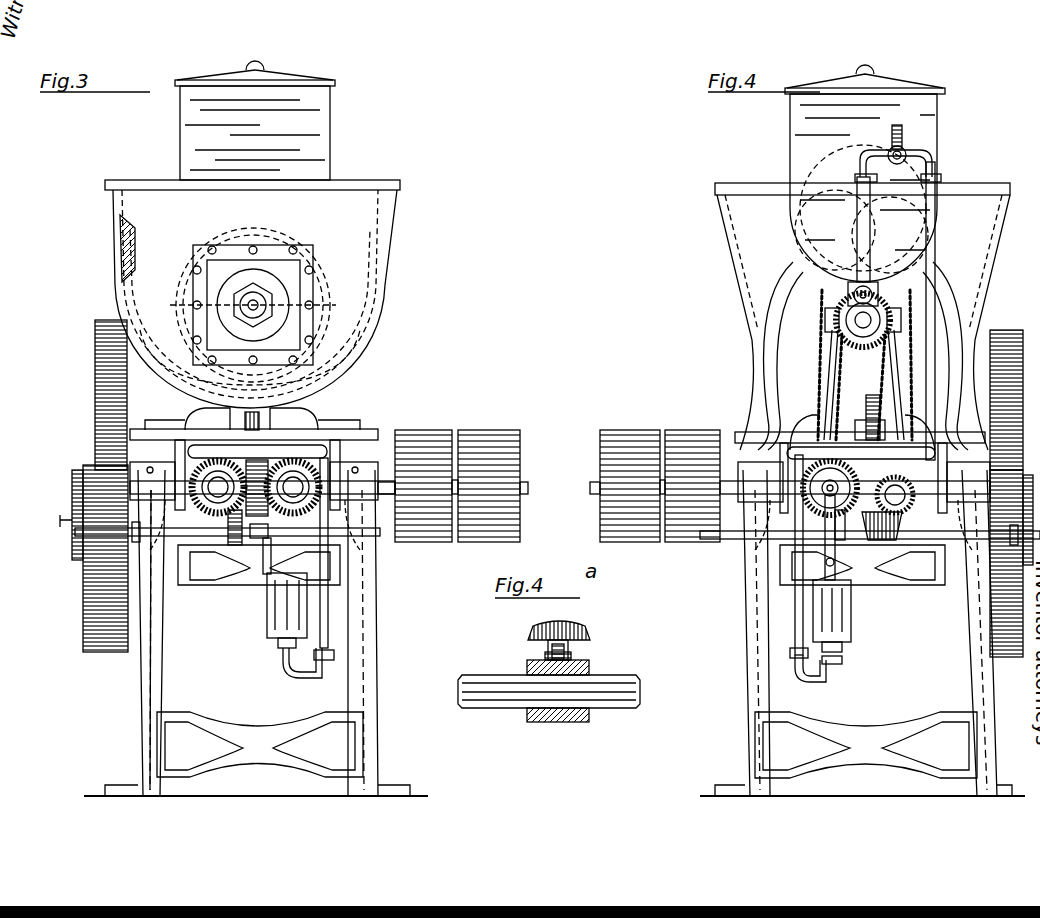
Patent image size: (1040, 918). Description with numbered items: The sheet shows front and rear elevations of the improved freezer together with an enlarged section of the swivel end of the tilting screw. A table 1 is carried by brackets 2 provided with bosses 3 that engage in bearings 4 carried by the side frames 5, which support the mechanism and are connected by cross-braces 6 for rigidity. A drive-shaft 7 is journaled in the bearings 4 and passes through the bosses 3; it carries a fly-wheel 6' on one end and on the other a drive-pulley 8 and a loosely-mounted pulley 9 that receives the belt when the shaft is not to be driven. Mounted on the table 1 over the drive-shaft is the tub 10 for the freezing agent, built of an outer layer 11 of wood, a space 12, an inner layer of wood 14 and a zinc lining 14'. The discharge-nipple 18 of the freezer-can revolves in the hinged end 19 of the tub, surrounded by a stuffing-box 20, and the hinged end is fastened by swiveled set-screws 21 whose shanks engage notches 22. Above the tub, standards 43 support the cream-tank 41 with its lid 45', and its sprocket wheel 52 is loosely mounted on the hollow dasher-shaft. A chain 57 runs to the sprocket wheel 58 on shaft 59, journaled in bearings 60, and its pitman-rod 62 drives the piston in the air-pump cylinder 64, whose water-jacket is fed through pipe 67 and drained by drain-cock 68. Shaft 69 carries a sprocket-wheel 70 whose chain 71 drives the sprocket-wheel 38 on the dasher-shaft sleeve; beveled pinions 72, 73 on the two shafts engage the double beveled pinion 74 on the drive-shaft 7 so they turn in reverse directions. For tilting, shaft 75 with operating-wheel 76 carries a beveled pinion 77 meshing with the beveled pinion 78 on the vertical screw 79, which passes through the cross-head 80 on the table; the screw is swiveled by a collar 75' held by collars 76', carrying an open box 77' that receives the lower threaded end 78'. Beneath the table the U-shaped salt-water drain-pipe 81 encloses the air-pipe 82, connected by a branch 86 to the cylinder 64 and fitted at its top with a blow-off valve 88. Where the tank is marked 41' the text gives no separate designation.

In FIG. 3, the table 1 is at (366, 440).
In FIG. 4, the table 1 is at (750, 432).
In FIG. 3, the brackets 2 is at (262, 510).
In FIG. 4, the brackets 2 is at (851, 475).
In FIG. 3, the bosses 3 is at (267, 526).
In FIG. 4, the bosses 3 is at (851, 515).
In FIG. 3, the bearings 4 is at (372, 452).
In FIG. 4, the bearings 4 is at (950, 490).
In FIG. 3, the side frames 5 is at (155, 675).
In FIG. 4, the side frames 5 is at (760, 690).
In FIG. 3, the cross-braces 6 is at (260, 672).
In FIG. 4, the cross-braces 6 is at (866, 676).
In FIG. 3, the fly-wheel 6' is at (86, 619).
In FIG. 4, the fly-wheel 6' is at (989, 399).
In FIG. 3, the drive-shaft 7 is at (385, 500).
In FIG. 4, the drive-shaft 7 is at (736, 517).
In FIG. 3, the drive-pulley 8 is at (415, 500).
In FIG. 4, the drive-pulley 8 is at (687, 500).
In FIG. 3, the loosely-mounted pulley 9 is at (490, 500).
In FIG. 4, the loosely-mounted pulley 9 is at (625, 500).
In FIG. 3, the tub 10 is at (252, 294).
In FIG. 4, the tub 10 is at (862, 316).
In FIG. 3, the outer layer 11 is at (120, 232).
In FIG. 3, the space 12 is at (125, 240).
In FIG. 3, the inner layer of wood 14 is at (95, 267).
In FIG. 3, the zinc lining 14' is at (92, 285).
In FIG. 3, the discharge-nipple 18 is at (265, 318).
In FIG. 3, the hinged end 19 is at (253, 305).
In FIG. 3, the stuffing-box 20 is at (246, 295).
In FIG. 3, the swiveled set-screws 21 is at (196, 305).
In FIG. 3, the notches 22 is at (255, 248).
In FIG. 4, the sprocket-wheel 38 is at (861, 322).
In FIG. 3, the cream-tank 41 is at (271, 133).
In FIG. 4, the tank 41' is at (863, 188).
In FIG. 3, the standards 43 is at (252, 417).
In FIG. 4, the standards 43 is at (790, 310).
In FIG. 3, the lid 45' is at (259, 71).
In FIG. 4, the lid 45' is at (873, 75).
In FIG. 4, the sprocket wheel 52 is at (855, 328).
In FIG. 4, the chain 57 is at (854, 365).
In FIG. 4, the sprocket wheel 58 is at (820, 520).
In FIG. 4, the shaft 59 is at (818, 500).
In FIG. 4, the bearings 60 is at (820, 470).
In FIG. 3, the pitman-rod 62 is at (268, 560).
In FIG. 4, the pitman-rod 62 is at (825, 545).
In FIG. 3, the cylinder 64 is at (266, 620).
In FIG. 4, the cylinder 64 is at (851, 622).
In FIG. 4, the pipe 67 is at (850, 575).
In FIG. 3, the drain-cock 68 is at (278, 645).
In FIG. 4, the drain-cock 68 is at (842, 650).
In FIG. 3, the shaft 69 is at (237, 496).
In FIG. 4, the shaft 69 is at (900, 512).
In FIG. 4, the sprocket-wheel 70 is at (908, 487).
In FIG. 4, the chain 71 is at (902, 385).
In FIG. 3, the beveled pinion 72 is at (215, 496).
In FIG. 3, the beveled pinion 73 is at (294, 496).
In FIG. 3, the double beveled pinion 74 is at (264, 425).
In FIG. 3, the shaft 75 is at (227, 543).
In FIG. 4, the shaft 75 is at (870, 543).
In FIG. 4A, the shaft 75 is at (545, 705).
In FIG. 4A, the collar 75' is at (558, 728).
In FIG. 3, the operating-wheel 76 is at (94, 486).
In FIG. 4, the operating-wheel 76 is at (1011, 493).
In FIG. 4A, the operating-wheel 76 is at (520, 734).
In FIG. 4A, the collars 76' is at (575, 698).
In FIG. 3, the beveled pinion 77 is at (259, 565).
In FIG. 4, the beveled pinion 77 is at (862, 574).
In FIG. 4A, the open box 77' is at (594, 638).
In FIG. 3, the beveled pinion 78 is at (248, 562).
In FIG. 4, the beveled pinion 78 is at (823, 543).
In FIG. 4A, the beveled pinion 78 is at (541, 629).
In FIG. 4A, the lower threaded end 78' is at (536, 651).
In FIG. 4, the vertical screw 79 is at (864, 406).
In FIG. 4A, the vertical screw 79 is at (572, 640).
In FIG. 4, the cross-head 80 is at (879, 417).
In FIG. 3, the salt-water drain-pipe 81 is at (300, 450).
In FIG. 4, the salt-water drain-pipe 81 is at (861, 459).
In FIG. 4, the air-pipe 82 is at (938, 265).
In FIG. 3, the branch 86 is at (320, 676).
In FIG. 4, the branch 86 is at (795, 622).
In FIG. 4, the blow-off valve 88 is at (910, 153).